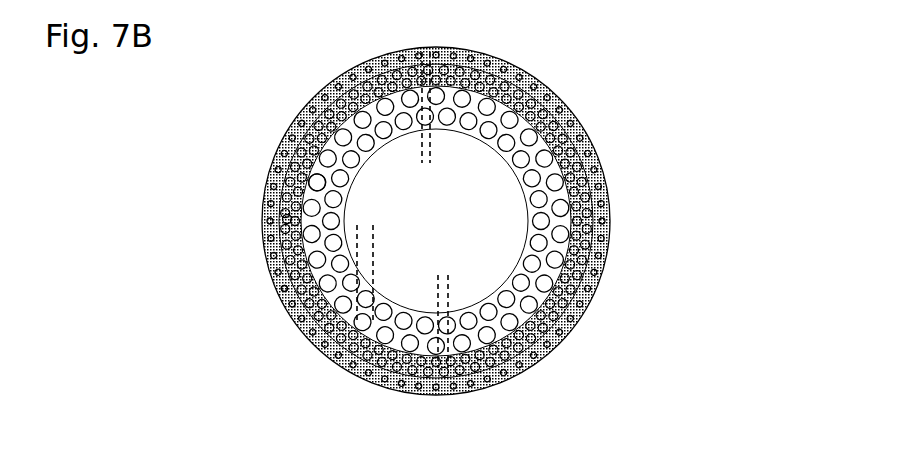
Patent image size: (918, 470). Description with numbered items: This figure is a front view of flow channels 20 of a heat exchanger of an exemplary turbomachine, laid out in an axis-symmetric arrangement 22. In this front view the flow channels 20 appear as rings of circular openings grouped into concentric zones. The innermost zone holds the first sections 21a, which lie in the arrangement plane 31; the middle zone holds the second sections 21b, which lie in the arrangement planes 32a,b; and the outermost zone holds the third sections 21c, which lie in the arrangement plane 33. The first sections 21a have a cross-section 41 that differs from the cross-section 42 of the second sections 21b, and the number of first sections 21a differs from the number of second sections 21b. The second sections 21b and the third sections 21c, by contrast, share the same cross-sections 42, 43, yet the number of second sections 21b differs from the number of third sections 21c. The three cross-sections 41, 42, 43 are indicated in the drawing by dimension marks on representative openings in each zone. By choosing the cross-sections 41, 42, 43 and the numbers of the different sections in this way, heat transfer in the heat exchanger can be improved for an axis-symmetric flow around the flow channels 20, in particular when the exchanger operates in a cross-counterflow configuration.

The flow channels 20 is at (567, 113).
The first sections 21a is at (484, 221).
The second sections 21b is at (443, 221).
The third sections 21c is at (462, 221).
The axis-symmetric arrangement 22 is at (443, 212).
The arrangement plane 31 is at (316, 168).
The arrangement planes 32a,b is at (278, 217).
The arrangement plane 33 is at (278, 293).
The cross-section 41 is at (387, 241).
The cross-section 42 is at (462, 288).
The cross-section 43 is at (446, 147).